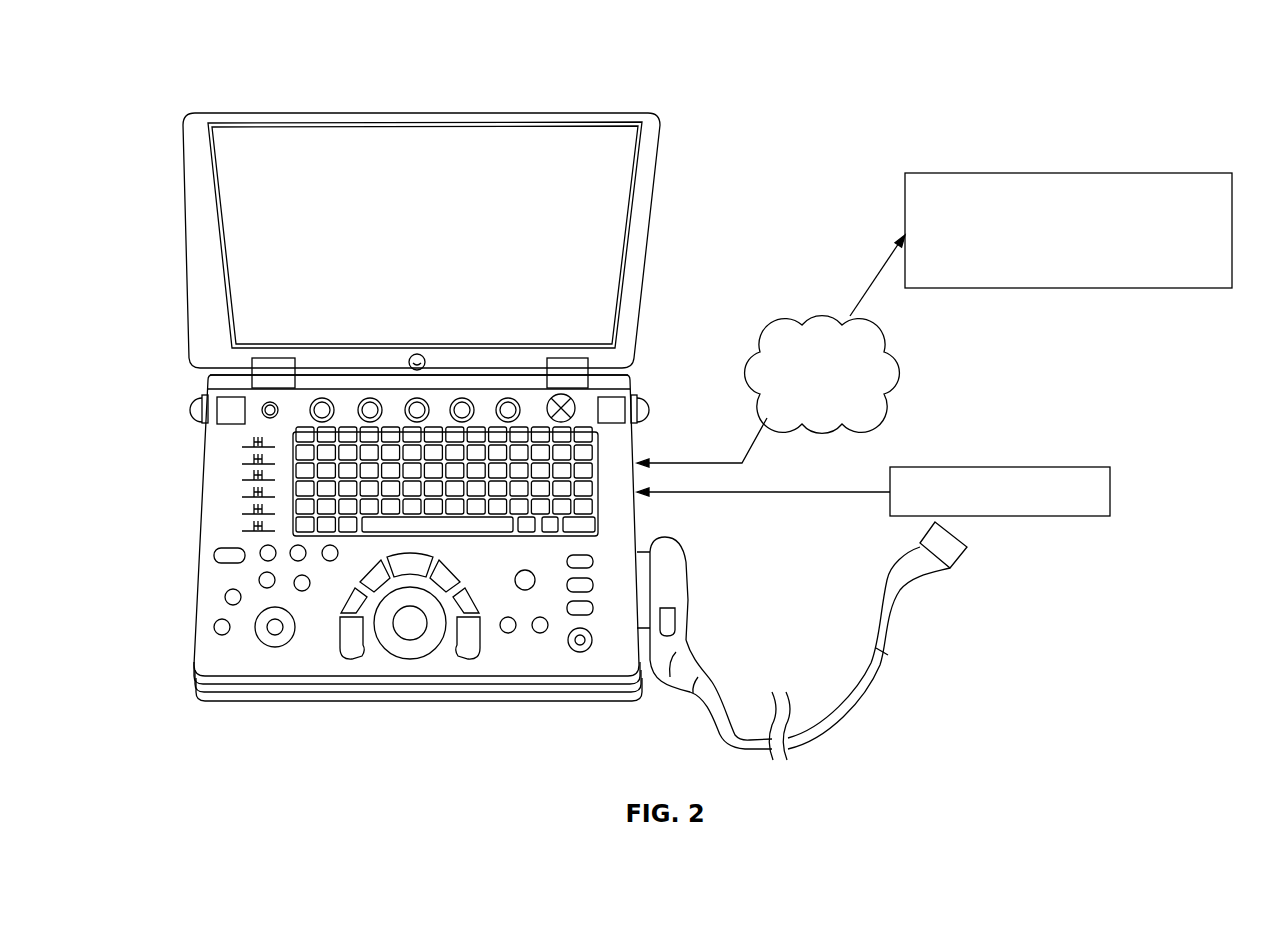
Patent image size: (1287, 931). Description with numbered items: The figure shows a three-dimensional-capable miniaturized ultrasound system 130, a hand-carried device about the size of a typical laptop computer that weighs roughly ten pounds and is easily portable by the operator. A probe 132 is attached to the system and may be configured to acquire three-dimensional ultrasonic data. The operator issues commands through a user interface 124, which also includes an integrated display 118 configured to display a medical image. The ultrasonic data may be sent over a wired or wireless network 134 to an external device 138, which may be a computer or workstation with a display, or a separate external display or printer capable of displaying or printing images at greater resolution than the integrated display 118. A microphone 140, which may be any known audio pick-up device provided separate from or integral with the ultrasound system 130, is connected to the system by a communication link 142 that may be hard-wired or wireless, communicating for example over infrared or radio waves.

The ultrasound system 130 is at (170, 72).
The integrated display 118 is at (172, 120).
The user interface 124 is at (197, 420).
The probe 132 is at (806, 748).
The network 134 is at (795, 318).
The external device 138 is at (965, 173).
The microphone 140 is at (950, 467).
The communication link 142 is at (838, 491).